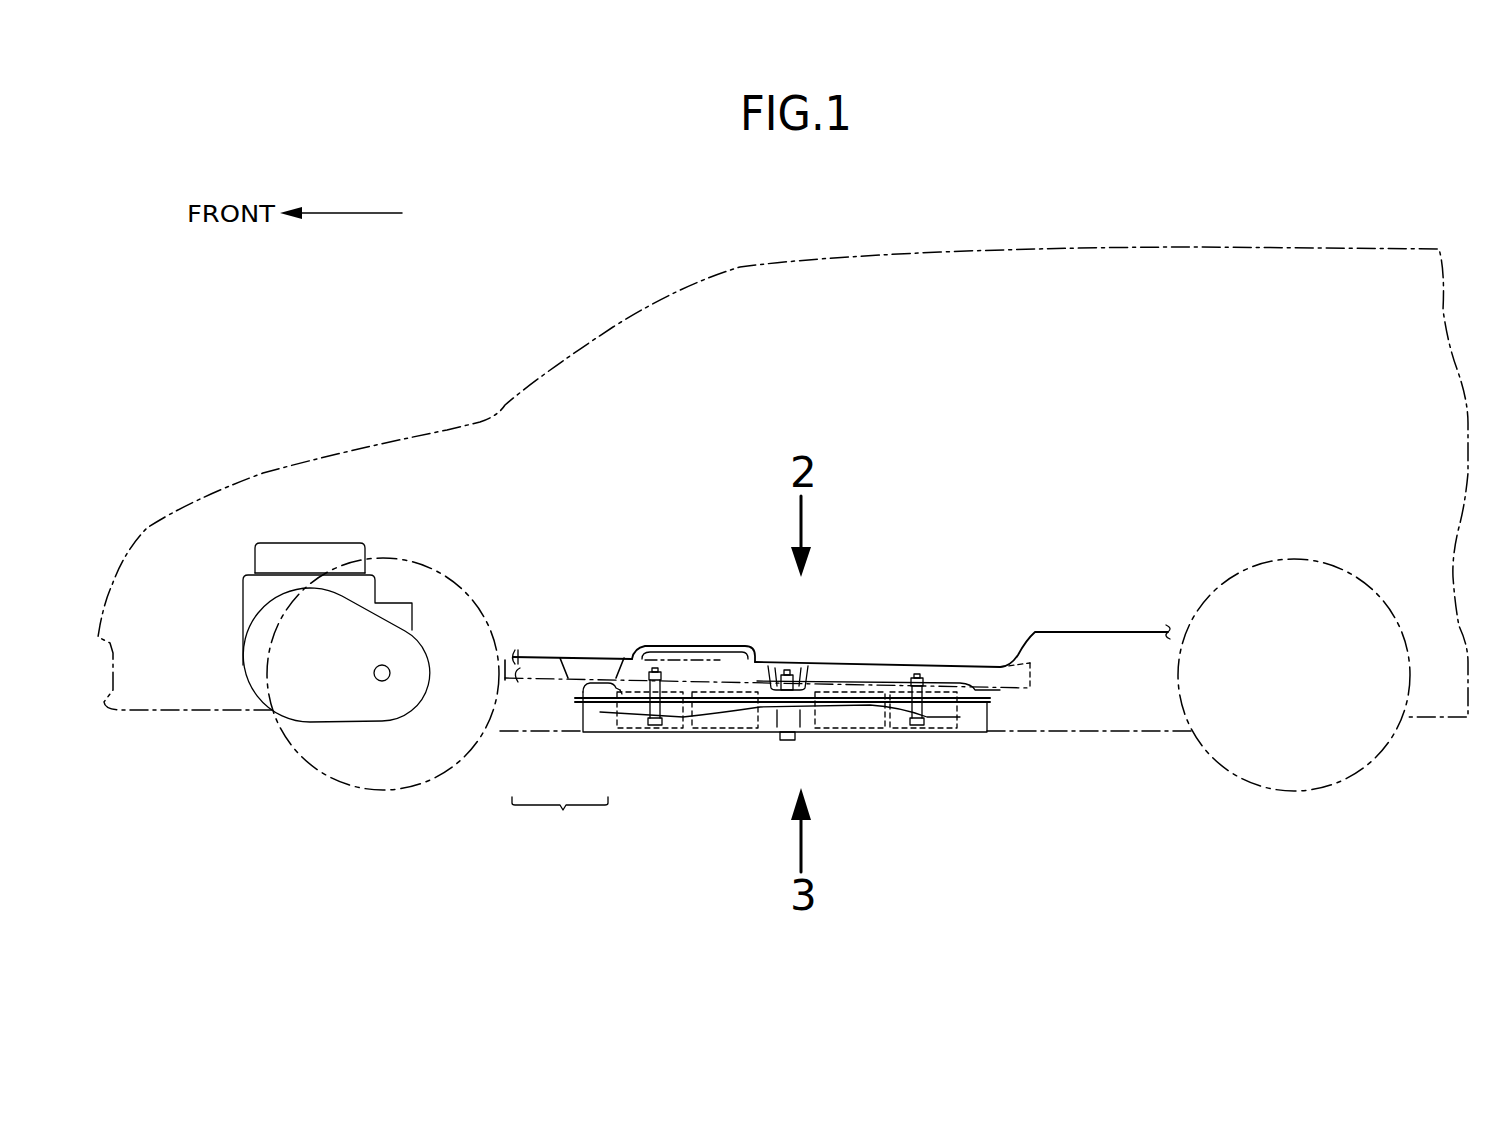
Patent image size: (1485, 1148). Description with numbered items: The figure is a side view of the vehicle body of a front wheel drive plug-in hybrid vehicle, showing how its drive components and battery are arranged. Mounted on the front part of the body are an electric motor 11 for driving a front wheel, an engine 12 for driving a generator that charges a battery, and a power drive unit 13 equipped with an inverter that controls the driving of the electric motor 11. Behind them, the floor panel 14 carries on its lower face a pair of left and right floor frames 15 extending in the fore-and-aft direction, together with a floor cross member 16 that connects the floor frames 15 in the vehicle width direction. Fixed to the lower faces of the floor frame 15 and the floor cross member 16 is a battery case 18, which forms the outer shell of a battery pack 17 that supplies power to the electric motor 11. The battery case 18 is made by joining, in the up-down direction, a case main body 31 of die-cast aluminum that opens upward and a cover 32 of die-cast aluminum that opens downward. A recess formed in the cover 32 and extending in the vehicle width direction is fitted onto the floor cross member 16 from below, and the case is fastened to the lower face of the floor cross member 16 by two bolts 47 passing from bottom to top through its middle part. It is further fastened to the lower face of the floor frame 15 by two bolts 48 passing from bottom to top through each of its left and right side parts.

The electric motor 11 is at (258, 663).
The engine 12 is at (252, 600).
The power drive unit 13 is at (267, 555).
The floor panel 14 is at (710, 645).
The floor frame 15 is at (1010, 690).
The floor cross member 16 is at (813, 677).
The battery pack 17 is at (751, 762).
The battery case 18 is at (560, 817).
The case main body 31 is at (600, 720).
The cover 32 is at (578, 692).
The bolt 47 is at (787, 742).
The bolt 48 is at (649, 720).